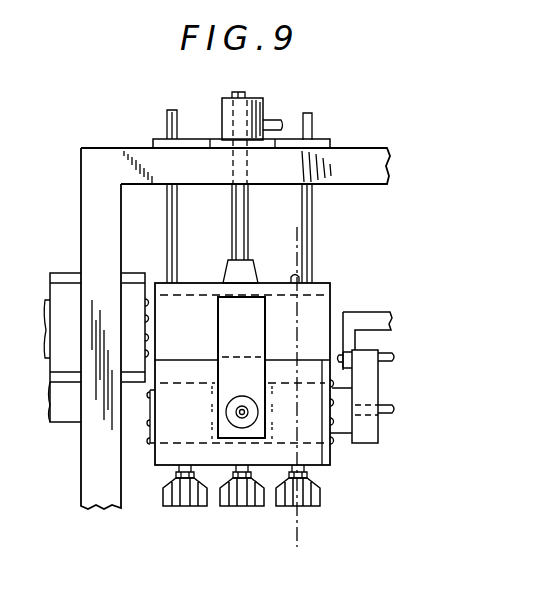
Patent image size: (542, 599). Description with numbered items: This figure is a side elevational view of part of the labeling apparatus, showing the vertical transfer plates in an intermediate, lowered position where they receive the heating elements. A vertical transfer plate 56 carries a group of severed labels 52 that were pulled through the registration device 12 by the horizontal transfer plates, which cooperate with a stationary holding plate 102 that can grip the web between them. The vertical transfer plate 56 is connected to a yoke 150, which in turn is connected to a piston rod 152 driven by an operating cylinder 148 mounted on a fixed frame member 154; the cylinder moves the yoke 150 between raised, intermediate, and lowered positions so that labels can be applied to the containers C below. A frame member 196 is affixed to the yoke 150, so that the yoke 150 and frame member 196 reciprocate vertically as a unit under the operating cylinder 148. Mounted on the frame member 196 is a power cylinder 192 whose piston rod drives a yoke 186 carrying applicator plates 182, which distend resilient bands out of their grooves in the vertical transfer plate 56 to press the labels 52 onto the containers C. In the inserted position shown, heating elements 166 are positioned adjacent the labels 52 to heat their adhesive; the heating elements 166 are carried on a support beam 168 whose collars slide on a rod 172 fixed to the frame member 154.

The registration device 12 is at (262, 526).
The label 52 is at (45, 343).
The vertical transfer plate 56 is at (326, 308).
The holding plate 102 is at (66, 290).
The operating cylinder 148 is at (264, 103).
The yoke 150 is at (329, 284).
The piston rod 152 is at (238, 232).
The frame member 154 is at (353, 157).
The heating element 166 is at (345, 434).
The support beam 168 is at (381, 442).
The rod 172 is at (373, 364).
The applicator plate 182 is at (158, 378).
The yoke 186 is at (166, 449).
The power cylinder 192 is at (228, 417).
The frame member 196 is at (226, 335).
The container article C is at (170, 488).